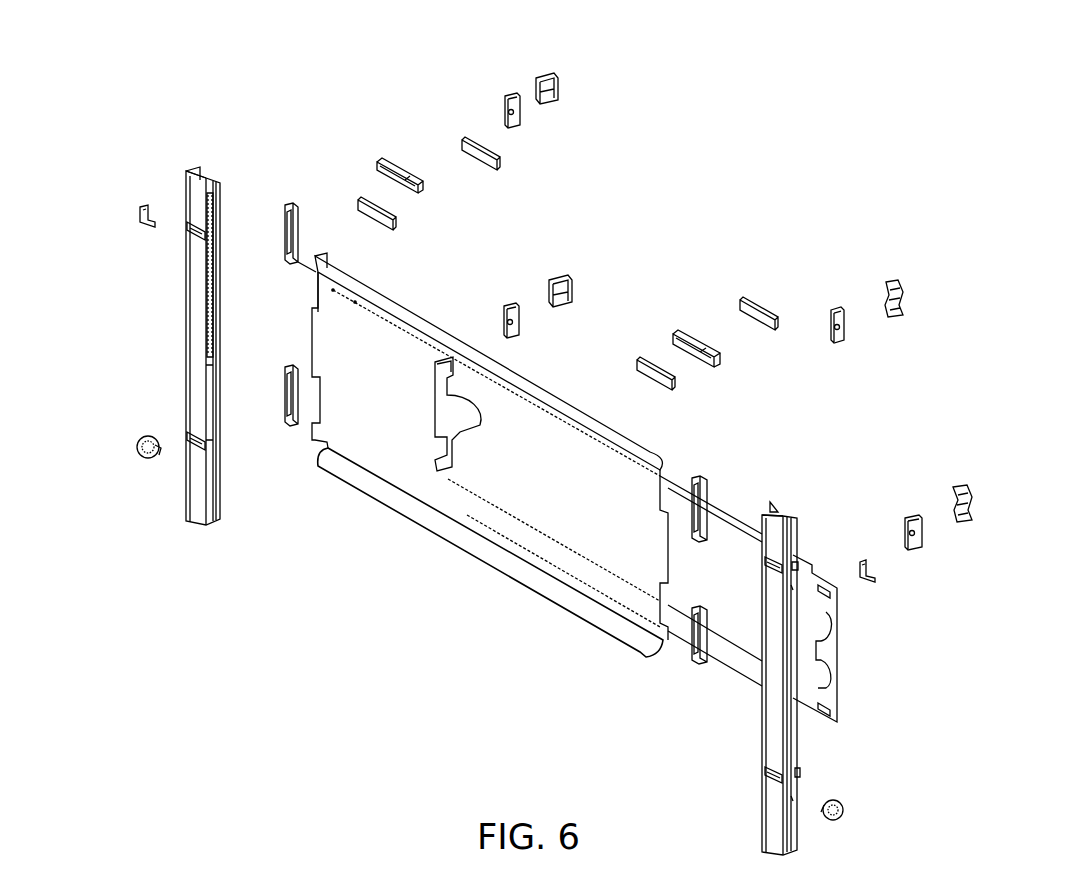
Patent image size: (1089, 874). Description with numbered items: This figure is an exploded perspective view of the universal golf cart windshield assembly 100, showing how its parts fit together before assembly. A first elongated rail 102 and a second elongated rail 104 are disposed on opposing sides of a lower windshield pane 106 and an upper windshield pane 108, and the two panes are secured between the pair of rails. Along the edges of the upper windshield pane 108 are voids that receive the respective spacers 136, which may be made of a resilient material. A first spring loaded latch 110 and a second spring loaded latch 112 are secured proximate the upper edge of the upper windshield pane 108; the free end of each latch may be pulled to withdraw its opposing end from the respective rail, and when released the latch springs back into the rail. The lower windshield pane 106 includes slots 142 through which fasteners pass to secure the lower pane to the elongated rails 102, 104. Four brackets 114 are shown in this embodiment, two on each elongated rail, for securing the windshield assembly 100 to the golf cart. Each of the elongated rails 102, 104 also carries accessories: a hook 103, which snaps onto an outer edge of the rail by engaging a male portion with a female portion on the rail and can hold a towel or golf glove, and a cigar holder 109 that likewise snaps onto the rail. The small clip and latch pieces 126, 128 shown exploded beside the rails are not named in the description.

The universal golf cart windshield assembly 100 is at (745, 117).
The first elongated rail 102 is at (197, 518).
The hook 103 is at (150, 206).
The second elongated rail 104 is at (780, 853).
The lower windshield pane 106 is at (757, 658).
The upper windshield pane 108 is at (500, 515).
The cigar holder 109 is at (145, 437).
The first spring loaded latch 110 is at (389, 147).
The second spring loaded latch 112 is at (707, 340).
The bracket 114 is at (577, 107).
The clip member 126 is at (548, 74).
The latch bracket 128 is at (512, 95).
The spacer 136 is at (290, 203).
The slot 142 is at (472, 413).